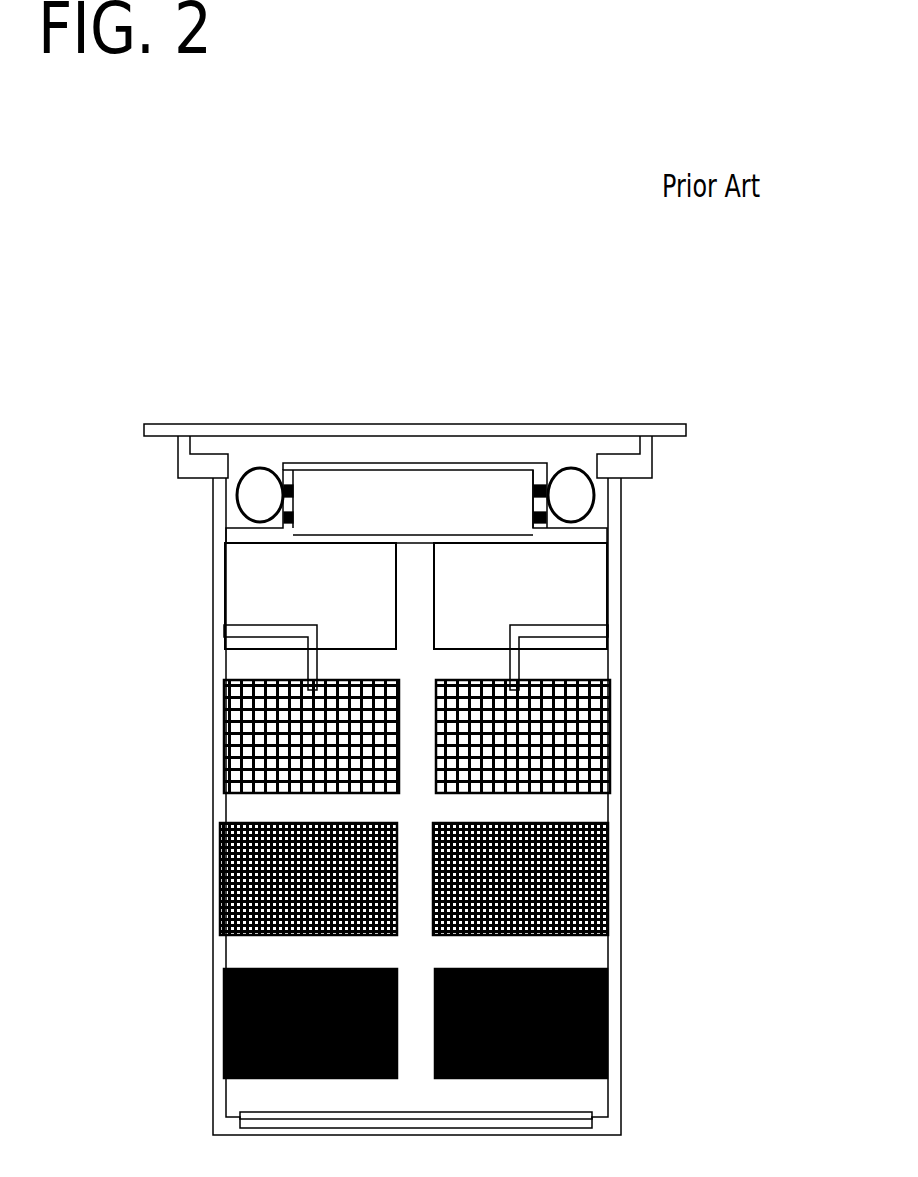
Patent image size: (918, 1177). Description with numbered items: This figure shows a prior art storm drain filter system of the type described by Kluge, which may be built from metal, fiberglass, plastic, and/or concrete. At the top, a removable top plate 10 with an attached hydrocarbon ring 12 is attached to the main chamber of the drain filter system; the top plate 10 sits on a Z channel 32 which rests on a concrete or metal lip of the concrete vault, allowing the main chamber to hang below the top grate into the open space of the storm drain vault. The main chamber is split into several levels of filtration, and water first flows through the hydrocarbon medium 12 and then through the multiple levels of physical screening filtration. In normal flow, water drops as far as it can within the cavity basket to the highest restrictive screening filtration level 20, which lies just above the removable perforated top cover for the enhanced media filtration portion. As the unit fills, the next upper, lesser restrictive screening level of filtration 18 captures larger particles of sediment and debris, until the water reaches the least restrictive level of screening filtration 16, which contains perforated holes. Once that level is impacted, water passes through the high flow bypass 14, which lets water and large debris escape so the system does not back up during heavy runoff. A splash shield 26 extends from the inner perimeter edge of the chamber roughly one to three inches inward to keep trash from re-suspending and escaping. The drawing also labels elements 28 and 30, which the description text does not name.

The top plate 10 is at (620, 457).
The hydrocarbon ring 12 is at (252, 495).
The high flow bypass 14 is at (578, 597).
The least restrictive level of screening filtration 16 is at (552, 768).
The lesser restrictive screening level of filtration 18 is at (552, 893).
The highest restrictive screening filtration level 20 is at (555, 1022).
The splash shield 26 is at (605, 634).
The seal cup 28 is at (535, 485).
The housing wall 30 is at (210, 517).
The Z channel 32 is at (163, 422).